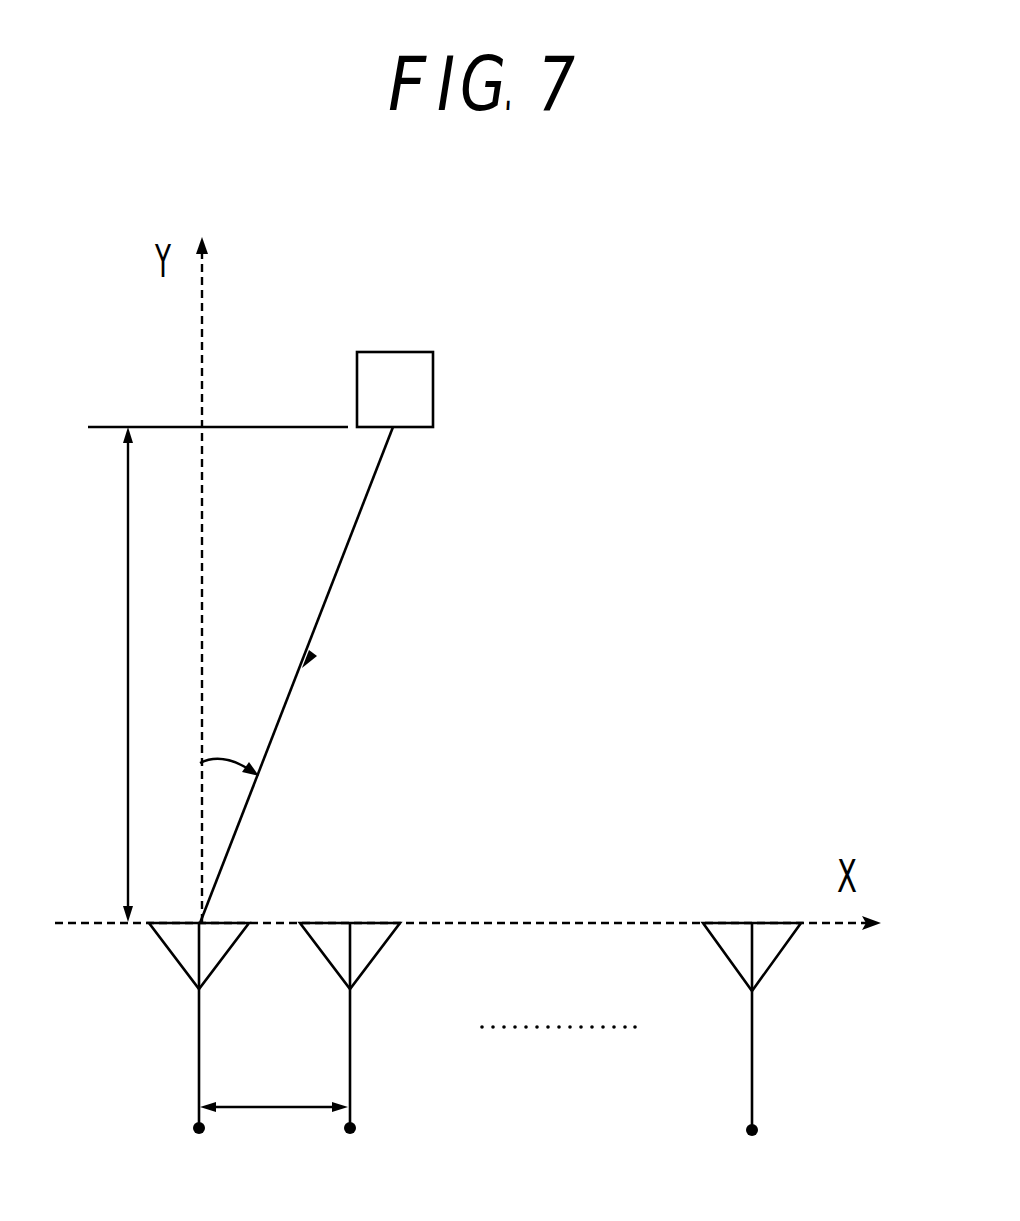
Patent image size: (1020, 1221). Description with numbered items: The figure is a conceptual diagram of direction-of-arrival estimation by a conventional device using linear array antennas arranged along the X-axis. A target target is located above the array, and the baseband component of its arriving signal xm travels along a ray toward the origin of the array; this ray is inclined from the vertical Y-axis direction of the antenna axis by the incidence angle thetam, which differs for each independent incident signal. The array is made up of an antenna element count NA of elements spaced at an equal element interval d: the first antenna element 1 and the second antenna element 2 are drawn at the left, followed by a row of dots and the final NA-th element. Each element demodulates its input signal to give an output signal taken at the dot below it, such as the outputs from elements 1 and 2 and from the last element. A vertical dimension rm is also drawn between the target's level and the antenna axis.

The first antenna element 1 is at (198, 1060).
The second antenna element 2 is at (348, 1060).
The antenna element count NA is at (761, 1064).
The element interval d is at (274, 1082).
The m-th target is at (400, 368).
The range to m-th target rm is at (102, 674).
The baseband component of the arriving signal xm is at (311, 675).
The incidence angle thetam is at (232, 725).